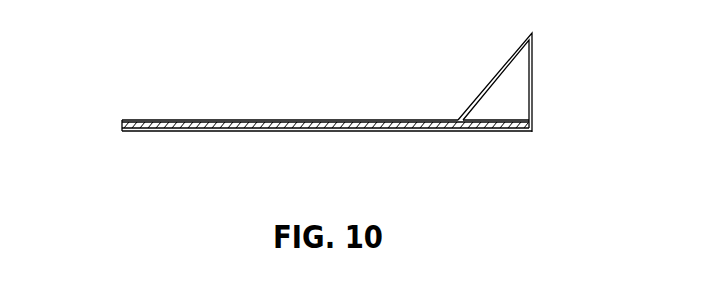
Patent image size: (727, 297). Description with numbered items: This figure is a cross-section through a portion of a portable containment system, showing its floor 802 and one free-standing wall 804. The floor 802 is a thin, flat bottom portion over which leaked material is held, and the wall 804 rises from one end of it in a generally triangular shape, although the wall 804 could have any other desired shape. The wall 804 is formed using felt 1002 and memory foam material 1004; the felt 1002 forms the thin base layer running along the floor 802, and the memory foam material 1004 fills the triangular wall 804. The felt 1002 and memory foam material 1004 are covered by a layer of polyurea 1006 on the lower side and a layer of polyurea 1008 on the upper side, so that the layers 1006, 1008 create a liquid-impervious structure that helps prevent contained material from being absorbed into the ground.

The floor 802 is at (330, 103).
The free-standing wall 804 is at (478, 77).
The felt 1002 is at (122, 131).
The memory foam material 1004 is at (527, 77).
The polyurea layer 1006 is at (397, 132).
The polyurea layer 1008 is at (333, 119).